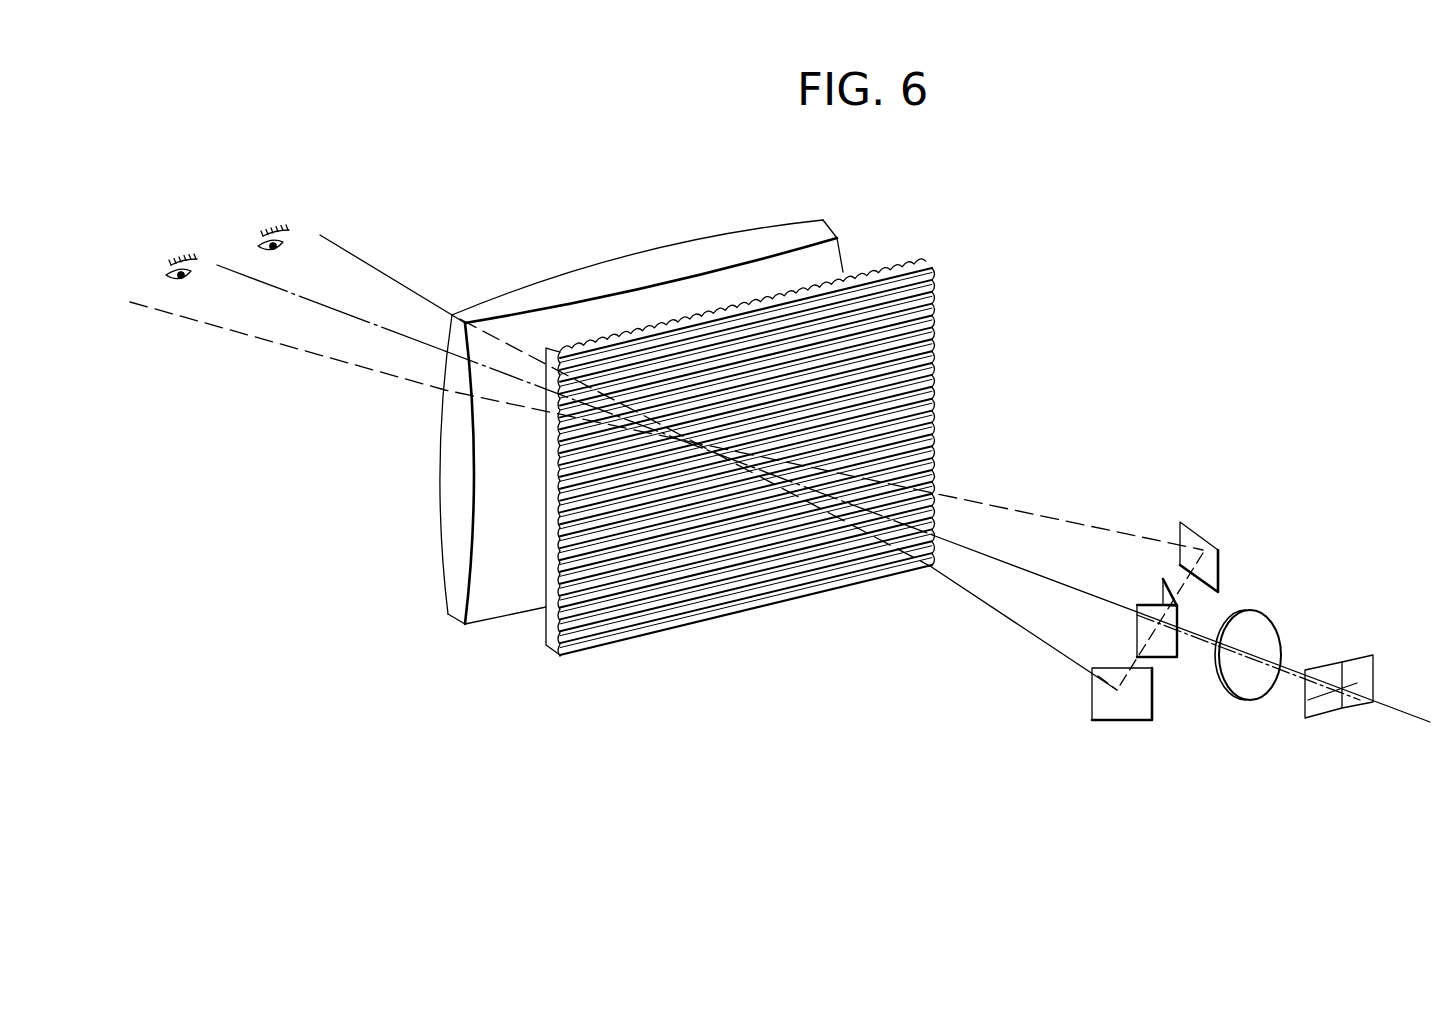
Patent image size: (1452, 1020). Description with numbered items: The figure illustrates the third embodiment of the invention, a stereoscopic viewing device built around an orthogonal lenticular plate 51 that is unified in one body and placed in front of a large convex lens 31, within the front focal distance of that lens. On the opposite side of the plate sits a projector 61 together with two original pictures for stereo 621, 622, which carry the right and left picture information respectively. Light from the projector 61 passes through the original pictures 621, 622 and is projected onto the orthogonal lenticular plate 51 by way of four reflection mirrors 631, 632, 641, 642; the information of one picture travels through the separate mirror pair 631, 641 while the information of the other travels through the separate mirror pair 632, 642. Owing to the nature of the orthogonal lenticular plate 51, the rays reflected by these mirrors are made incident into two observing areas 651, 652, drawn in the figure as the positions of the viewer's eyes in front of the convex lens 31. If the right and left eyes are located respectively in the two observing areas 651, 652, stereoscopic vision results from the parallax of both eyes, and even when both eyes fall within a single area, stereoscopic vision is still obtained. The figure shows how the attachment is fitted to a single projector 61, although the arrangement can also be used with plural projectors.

The large convex lens 31 is at (823, 233).
The orthogonal lenticular plate 51 is at (918, 267).
The projector 61 is at (1361, 681).
The original picture for stereo 621 is at (1318, 705).
The original picture for stereo 622 is at (1390, 681).
The reflection mirror 631 is at (1174, 588).
The reflection mirror 632 is at (1160, 657).
The reflection mirror 641 is at (1219, 560).
The reflection mirror 642 is at (1138, 707).
The observing area 651 is at (202, 277).
The observing area 652 is at (297, 247).